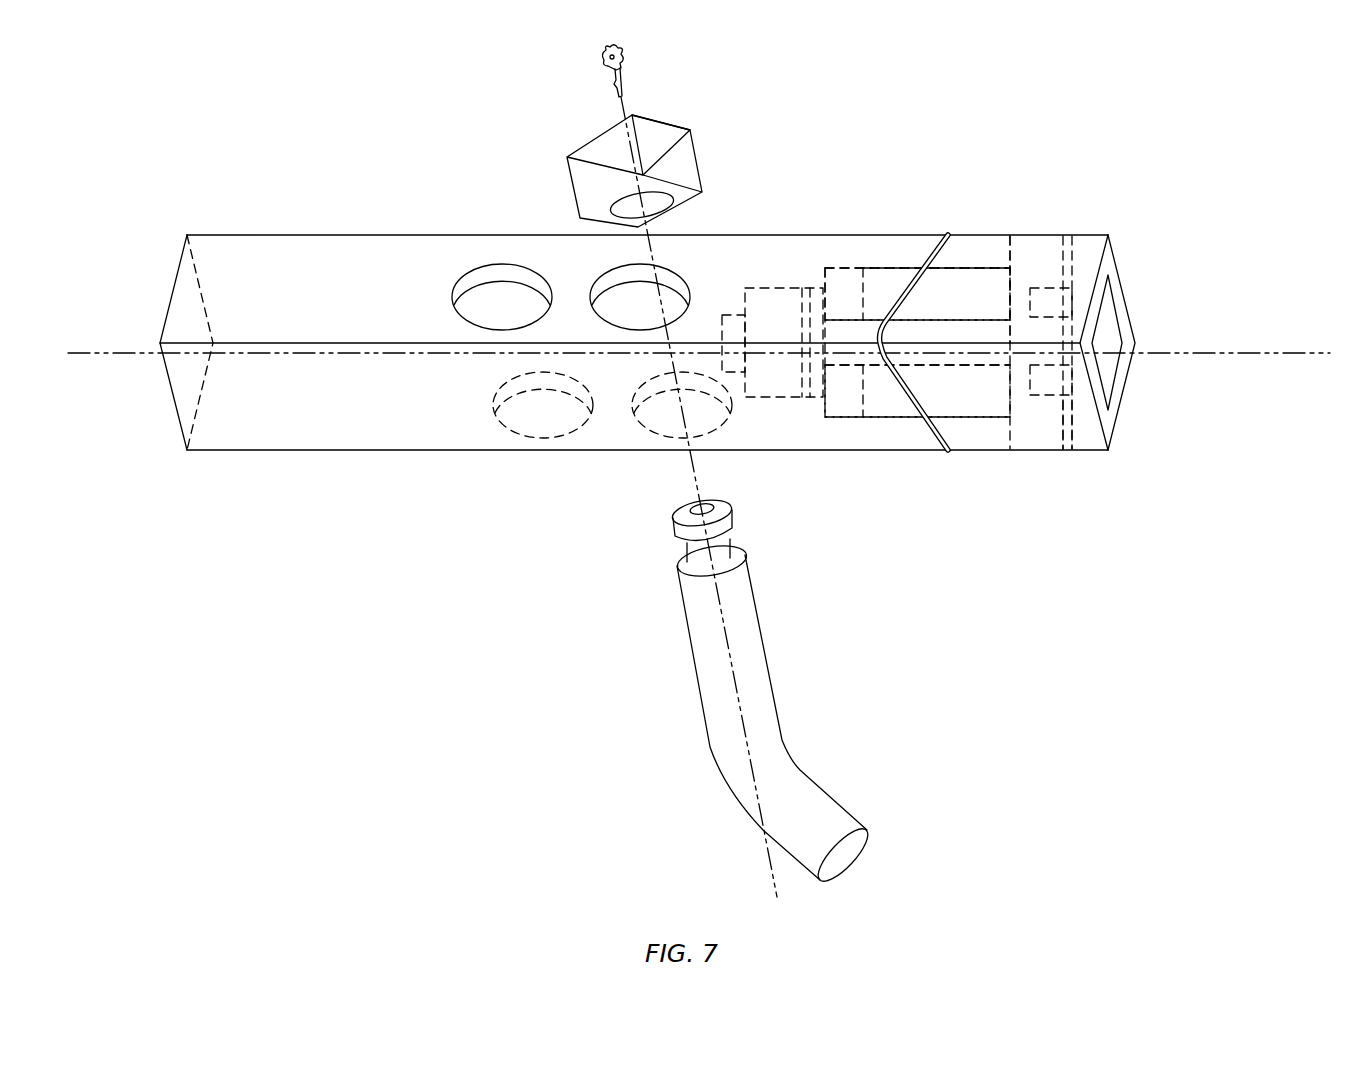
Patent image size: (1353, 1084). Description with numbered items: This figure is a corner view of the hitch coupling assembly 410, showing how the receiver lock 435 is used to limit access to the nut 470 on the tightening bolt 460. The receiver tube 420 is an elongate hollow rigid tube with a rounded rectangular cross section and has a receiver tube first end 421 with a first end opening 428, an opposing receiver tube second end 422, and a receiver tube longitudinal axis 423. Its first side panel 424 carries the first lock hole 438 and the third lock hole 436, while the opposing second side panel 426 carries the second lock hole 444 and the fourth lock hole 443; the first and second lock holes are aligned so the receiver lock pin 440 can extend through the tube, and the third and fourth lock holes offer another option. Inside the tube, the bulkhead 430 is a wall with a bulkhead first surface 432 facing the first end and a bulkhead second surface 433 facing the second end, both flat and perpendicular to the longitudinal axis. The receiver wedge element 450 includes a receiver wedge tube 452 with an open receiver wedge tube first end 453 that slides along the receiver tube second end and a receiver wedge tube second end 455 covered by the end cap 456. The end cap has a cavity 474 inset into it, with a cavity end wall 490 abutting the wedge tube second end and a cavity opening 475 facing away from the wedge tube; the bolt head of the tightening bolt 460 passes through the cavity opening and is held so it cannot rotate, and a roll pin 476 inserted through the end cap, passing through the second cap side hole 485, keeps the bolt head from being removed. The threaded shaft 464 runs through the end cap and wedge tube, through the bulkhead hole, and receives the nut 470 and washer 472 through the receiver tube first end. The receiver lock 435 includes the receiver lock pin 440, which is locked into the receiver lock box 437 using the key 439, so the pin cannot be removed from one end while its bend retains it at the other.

The hitch coupling assembly 410 is at (701, 471).
The receiver tube 420 is at (358, 420).
The receiver tube first end 421 is at (192, 427).
The receiver tube second end 422 is at (905, 433).
The receiver tube longitudinal axis 423 is at (1318, 351).
The first side panel 424 is at (283, 247).
The second side panel 426 is at (1118, 430).
The first end opening 428 is at (158, 398).
The bulkhead 430 is at (845, 395).
The bulkhead first surface 432 is at (827, 278).
The bulkhead second surface 433 is at (865, 290).
The receiver lock 435 is at (594, 150).
The third lock hole 436 is at (488, 308).
The receiver lock box 437 is at (656, 128).
The first lock hole 438 is at (663, 295).
The key 439 is at (603, 58).
The receiver lock pin 440 is at (752, 683).
The fourth lock hole 443 is at (543, 405).
The second lock hole 444 is at (665, 413).
The receiver wedge element 450 is at (1013, 346).
The receiver wedge tube 452 is at (997, 432).
The receiver wedge tube first end 453 is at (945, 258).
The receiver wedge tube second end 455 is at (995, 245).
The end cap 456 is at (1038, 250).
The tightening bolt 460 is at (966, 327).
The threaded shaft 464 is at (850, 332).
The nut 470 is at (768, 380).
The washer 472 is at (815, 388).
The cavity 474 is at (1078, 302).
The cavity opening 475 is at (1110, 325).
The roll pin 476 is at (1047, 307).
The second cap side hole 485 is at (1068, 442).
The cavity end wall 490 is at (1017, 392).